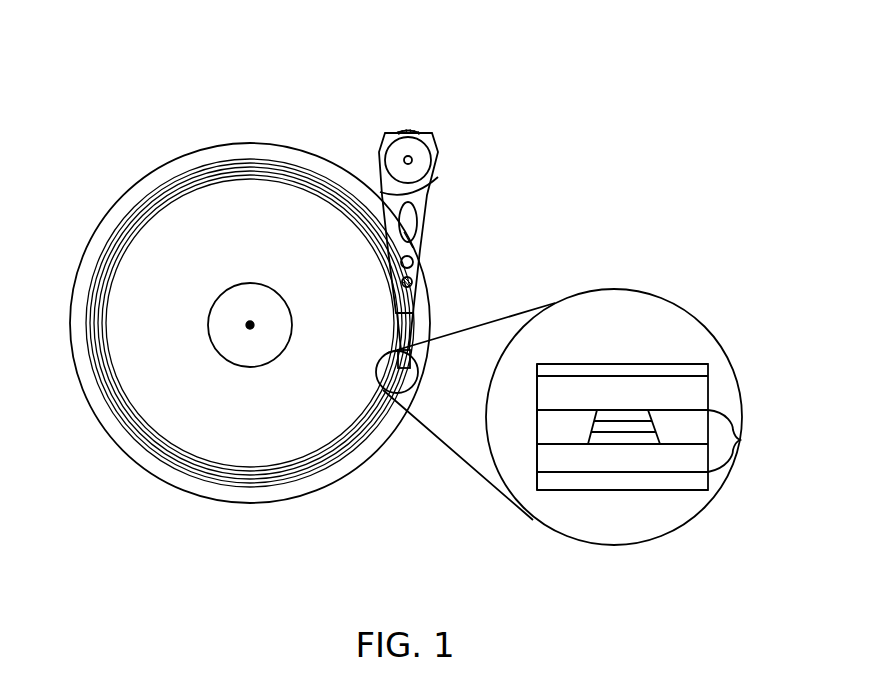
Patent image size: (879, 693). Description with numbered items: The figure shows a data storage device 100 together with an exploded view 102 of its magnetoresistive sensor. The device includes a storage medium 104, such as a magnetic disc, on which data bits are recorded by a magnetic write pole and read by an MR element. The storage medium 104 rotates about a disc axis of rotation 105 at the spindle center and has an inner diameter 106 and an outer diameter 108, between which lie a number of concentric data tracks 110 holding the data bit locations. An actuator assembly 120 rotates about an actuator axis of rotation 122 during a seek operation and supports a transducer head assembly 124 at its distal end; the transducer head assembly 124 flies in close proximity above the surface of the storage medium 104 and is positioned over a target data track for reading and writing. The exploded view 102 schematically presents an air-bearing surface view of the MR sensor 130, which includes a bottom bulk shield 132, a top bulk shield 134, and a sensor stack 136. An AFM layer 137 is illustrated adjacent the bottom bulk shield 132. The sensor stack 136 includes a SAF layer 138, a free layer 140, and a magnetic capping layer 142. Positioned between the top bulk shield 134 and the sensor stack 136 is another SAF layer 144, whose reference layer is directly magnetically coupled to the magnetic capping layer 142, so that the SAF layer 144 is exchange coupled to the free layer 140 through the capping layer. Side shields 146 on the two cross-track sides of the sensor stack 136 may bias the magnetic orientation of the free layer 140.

The data storage device 100 is at (133, 72).
The exploded view 102 is at (610, 289).
The storage medium 104 is at (275, 145).
The disc axis of rotation 105 is at (250, 325).
The inner diameter 106 is at (247, 282).
The outer diameter 108 is at (233, 158).
The data tracks 110 is at (327, 475).
The actuator assembly 120 is at (452, 157).
The actuator axis of rotation 122 is at (412, 158).
The transducer head assembly 124 is at (385, 358).
The MR sensor 130 is at (680, 350).
The bottom bulk shield 132 is at (657, 490).
The top bulk shield 134 is at (558, 363).
The sensor stack 136 is at (745, 440).
The AFM layer 137 is at (537, 463).
The SAF layer 138 is at (588, 443).
The free layer 140 is at (605, 430).
The magnetic capping layer 142 is at (608, 409).
The SAF layer 144 is at (685, 388).
The side shields 146 is at (677, 448).